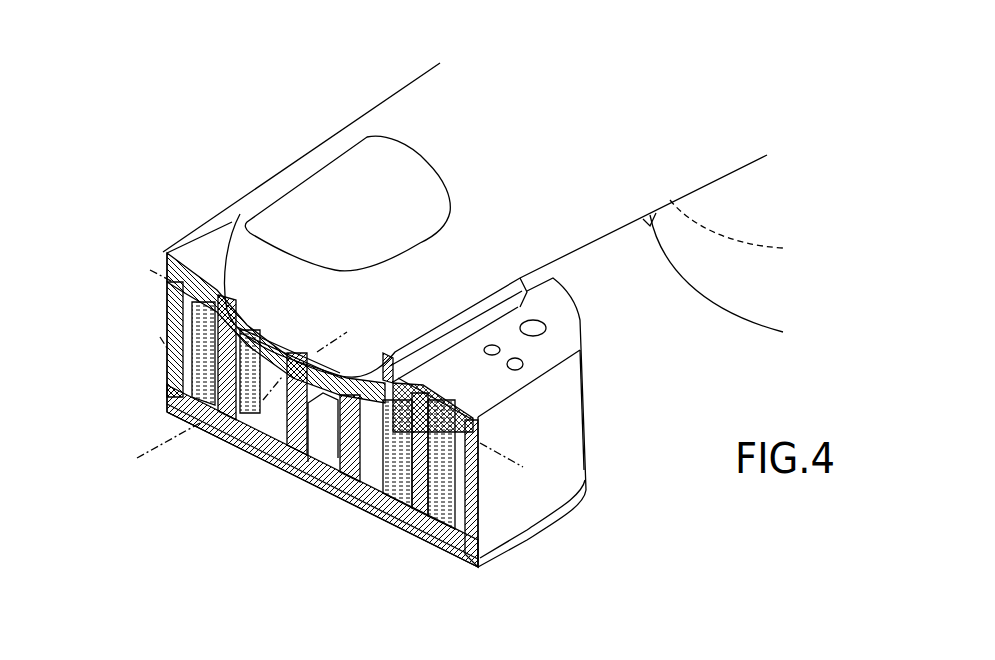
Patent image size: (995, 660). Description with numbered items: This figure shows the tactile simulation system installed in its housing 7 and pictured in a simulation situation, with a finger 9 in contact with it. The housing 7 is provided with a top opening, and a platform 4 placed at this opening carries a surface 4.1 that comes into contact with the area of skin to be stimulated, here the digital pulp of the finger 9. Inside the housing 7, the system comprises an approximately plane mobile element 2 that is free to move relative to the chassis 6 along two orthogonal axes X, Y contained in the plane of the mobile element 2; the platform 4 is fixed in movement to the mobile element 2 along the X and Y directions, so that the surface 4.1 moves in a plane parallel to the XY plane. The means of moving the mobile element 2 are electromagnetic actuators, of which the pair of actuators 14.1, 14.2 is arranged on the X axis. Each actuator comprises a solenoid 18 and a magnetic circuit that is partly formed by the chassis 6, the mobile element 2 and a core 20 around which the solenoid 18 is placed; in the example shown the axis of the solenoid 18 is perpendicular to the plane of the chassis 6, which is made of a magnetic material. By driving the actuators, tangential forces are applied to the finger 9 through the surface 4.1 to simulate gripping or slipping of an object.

The finger 9 is at (430, 101).
The core 20 is at (163, 275).
The electromagnetic actuator 14.1 is at (132, 327).
The solenoid 18 is at (210, 366).
The mobile element 2 is at (340, 478).
The chassis 6 is at (254, 459).
The surface 4.1 is at (440, 333).
The platform 4 is at (502, 306).
The electromagnetic actuator 14.2 is at (567, 545).
The housing 7 is at (557, 415).
The X axis X is at (150, 264).
The Y axis Y is at (153, 446).